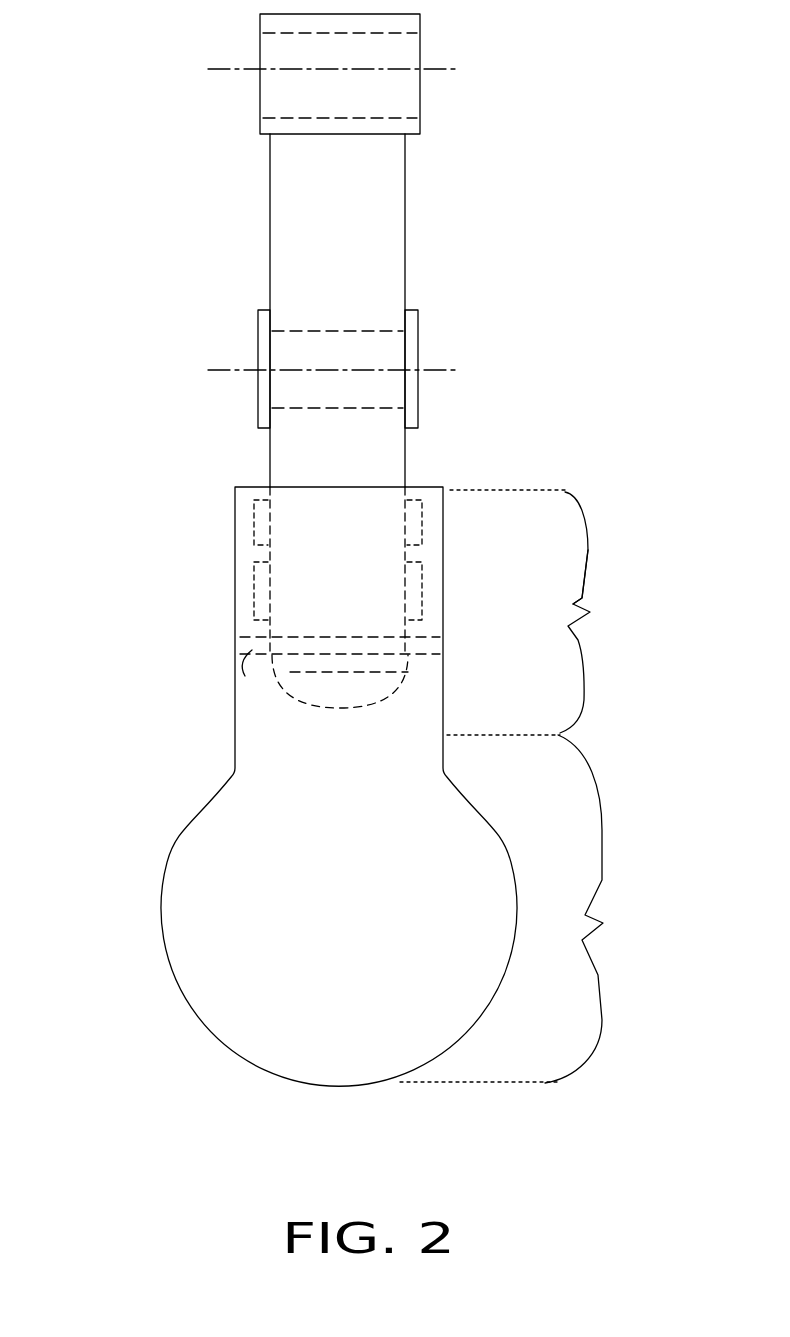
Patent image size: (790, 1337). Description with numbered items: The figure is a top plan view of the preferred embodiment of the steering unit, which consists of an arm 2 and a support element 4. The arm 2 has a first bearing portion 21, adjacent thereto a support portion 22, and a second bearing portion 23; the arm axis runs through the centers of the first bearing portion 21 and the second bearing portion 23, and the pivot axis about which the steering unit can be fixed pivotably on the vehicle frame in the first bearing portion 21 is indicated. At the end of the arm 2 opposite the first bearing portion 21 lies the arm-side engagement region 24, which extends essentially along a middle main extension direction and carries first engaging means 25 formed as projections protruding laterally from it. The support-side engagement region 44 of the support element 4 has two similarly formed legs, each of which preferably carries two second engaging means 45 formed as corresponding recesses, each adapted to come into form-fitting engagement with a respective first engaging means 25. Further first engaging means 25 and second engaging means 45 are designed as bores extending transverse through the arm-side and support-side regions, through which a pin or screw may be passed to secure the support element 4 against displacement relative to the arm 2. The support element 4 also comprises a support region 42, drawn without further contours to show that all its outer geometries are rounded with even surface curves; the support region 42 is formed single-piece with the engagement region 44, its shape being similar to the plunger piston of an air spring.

The arm 2 is at (364, 250).
The first bearing portion 21 is at (518, 58).
The support portion 22 is at (497, 262).
The second bearing portion 23 is at (530, 412).
The first engaging means 25 is at (257, 593).
The support element 4 is at (379, 786).
The second engaging means 45 is at (237, 672).
The support-side engagement region 44 is at (635, 581).
The arm-side engagement region 24 is at (562, 612).
The support region 42 is at (541, 909).